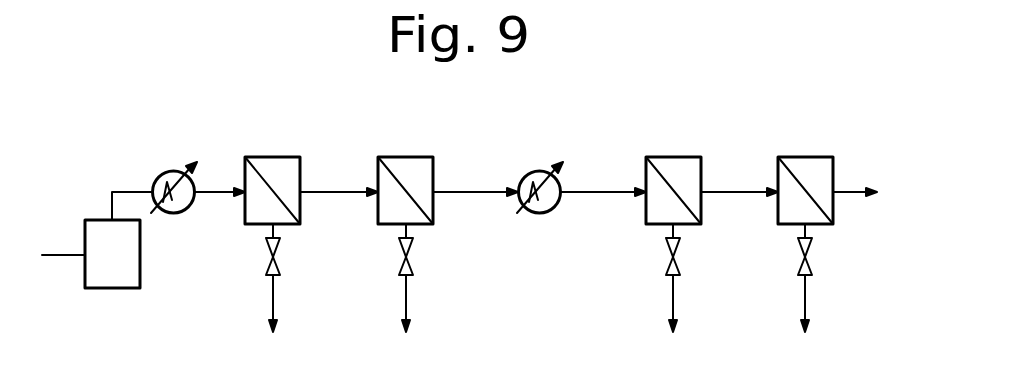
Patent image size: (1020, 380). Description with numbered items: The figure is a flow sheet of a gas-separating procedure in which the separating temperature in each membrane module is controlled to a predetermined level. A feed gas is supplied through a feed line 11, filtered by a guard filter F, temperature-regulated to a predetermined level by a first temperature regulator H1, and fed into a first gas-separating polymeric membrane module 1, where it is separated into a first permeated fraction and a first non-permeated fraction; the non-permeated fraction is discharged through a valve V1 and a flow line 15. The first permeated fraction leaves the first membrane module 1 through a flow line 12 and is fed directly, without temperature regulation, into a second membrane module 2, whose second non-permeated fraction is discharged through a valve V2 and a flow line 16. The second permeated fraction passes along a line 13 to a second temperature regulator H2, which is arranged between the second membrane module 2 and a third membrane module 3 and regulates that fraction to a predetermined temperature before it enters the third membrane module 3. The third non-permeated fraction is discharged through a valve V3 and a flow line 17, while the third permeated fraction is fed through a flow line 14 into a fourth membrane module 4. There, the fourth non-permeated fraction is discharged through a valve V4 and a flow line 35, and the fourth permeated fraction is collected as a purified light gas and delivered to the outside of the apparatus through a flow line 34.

The feed line 11 is at (55, 255).
The guard filter F is at (140, 276).
The first temperature regulator H1 is at (185, 209).
The first gas-separating polymeric membrane module 1 is at (273, 157).
The flow line 12 is at (339, 188).
The second membrane module 2 is at (413, 157).
The connecting line between second unit and second heater 13 is at (476, 188).
The second temperature regulator H2 is at (553, 210).
The third membrane module 3 is at (673, 157).
The flow line 14 is at (735, 188).
The fourth membrane module 4 is at (806, 157).
The flow line 34 is at (856, 186).
The valve V1 is at (282, 258).
The flow line 15 is at (274, 300).
The valve V2 is at (415, 258).
The flow line 16 is at (407, 300).
The valve V3 is at (682, 258).
The flow line 17 is at (674, 300).
The valve V4 is at (814, 258).
The flow line 35 is at (806, 300).